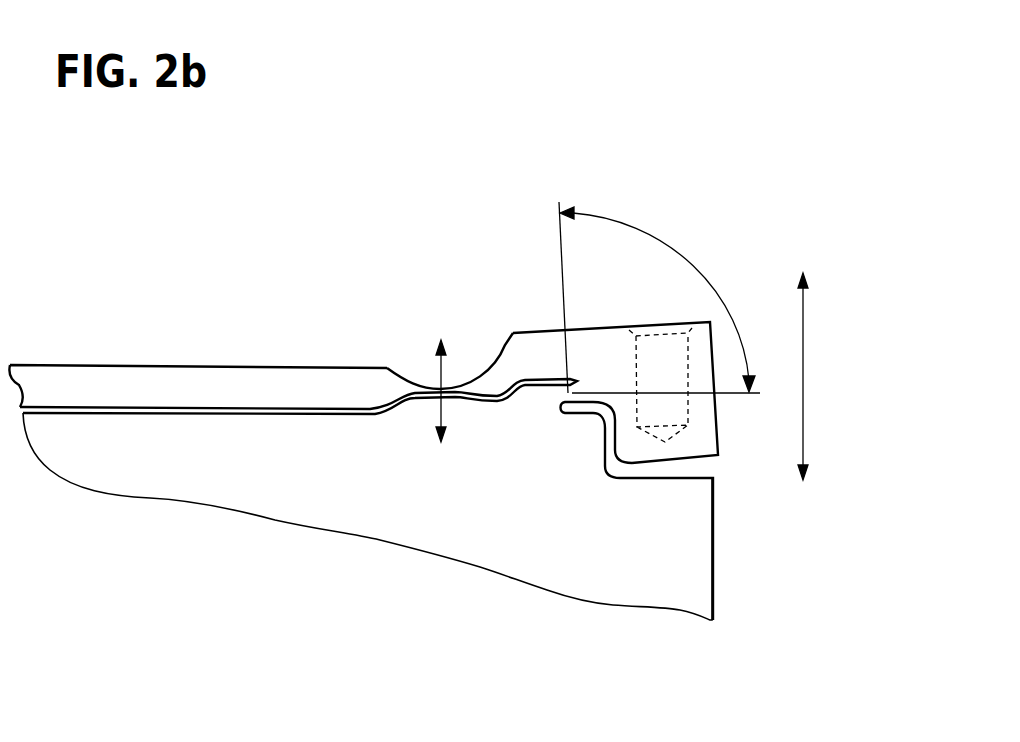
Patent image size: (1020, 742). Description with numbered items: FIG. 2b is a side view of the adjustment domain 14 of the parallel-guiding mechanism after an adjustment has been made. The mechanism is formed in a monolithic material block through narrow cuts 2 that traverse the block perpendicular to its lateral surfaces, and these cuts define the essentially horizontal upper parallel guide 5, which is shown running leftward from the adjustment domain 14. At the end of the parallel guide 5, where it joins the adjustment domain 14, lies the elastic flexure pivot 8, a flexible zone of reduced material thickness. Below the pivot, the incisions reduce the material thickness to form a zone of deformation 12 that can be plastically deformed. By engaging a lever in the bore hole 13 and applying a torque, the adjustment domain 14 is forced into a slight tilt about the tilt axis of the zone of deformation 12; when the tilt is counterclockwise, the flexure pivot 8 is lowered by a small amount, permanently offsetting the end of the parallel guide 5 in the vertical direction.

The narrow cuts 2 is at (312, 410).
The upper parallel guide 5 is at (218, 385).
The flexure pivot 8 is at (437, 388).
The zone of deformation 12 is at (563, 412).
The bore hole 13 is at (660, 413).
The adjustment domain 14 is at (538, 350).